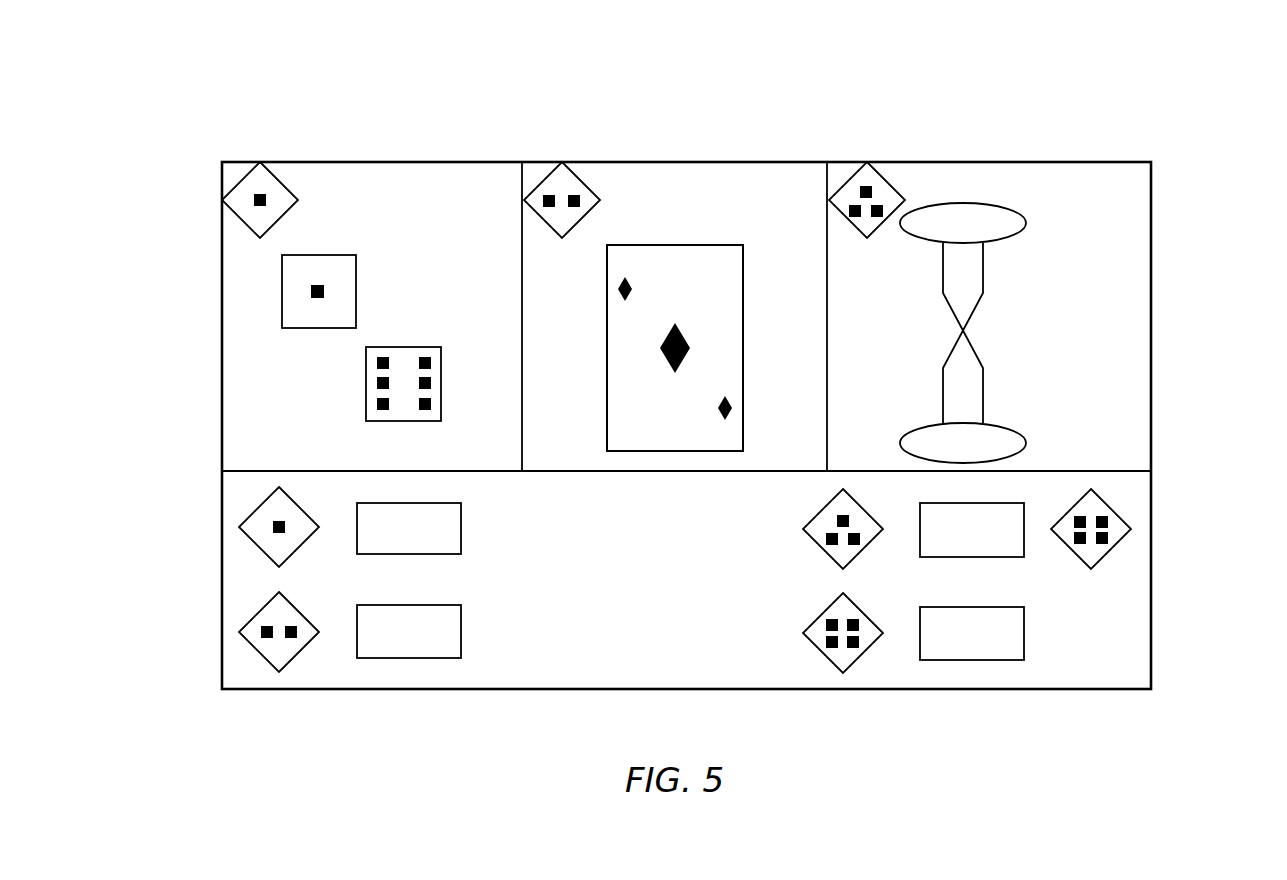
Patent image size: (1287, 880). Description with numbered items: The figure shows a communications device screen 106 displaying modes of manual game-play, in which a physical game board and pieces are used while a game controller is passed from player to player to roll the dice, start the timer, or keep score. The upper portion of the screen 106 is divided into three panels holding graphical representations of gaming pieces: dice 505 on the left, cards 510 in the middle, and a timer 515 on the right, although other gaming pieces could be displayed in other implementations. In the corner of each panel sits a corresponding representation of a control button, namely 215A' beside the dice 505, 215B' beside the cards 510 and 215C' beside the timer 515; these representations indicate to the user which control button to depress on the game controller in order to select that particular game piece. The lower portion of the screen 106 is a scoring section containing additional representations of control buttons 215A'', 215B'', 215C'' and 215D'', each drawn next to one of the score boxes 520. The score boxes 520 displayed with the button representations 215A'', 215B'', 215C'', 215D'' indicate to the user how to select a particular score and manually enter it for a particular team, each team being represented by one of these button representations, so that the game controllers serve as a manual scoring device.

The communications device screen 106 is at (200, 126).
The dice 505 is at (288, 374).
The cards 510 is at (677, 232).
The timer 515 is at (1040, 325).
The score boxes 520 is at (462, 535).
The representation of control button 215A' is at (212, 208).
The representation of control button 215B' is at (551, 166).
The representation of control button 215C' is at (867, 170).
The additional representation of control button 215A'' is at (225, 527).
The additional representation of control button 215B'' is at (218, 632).
The additional representation of control button 215C'' is at (810, 543).
The additional representation of control button 215D'' is at (1029, 620).